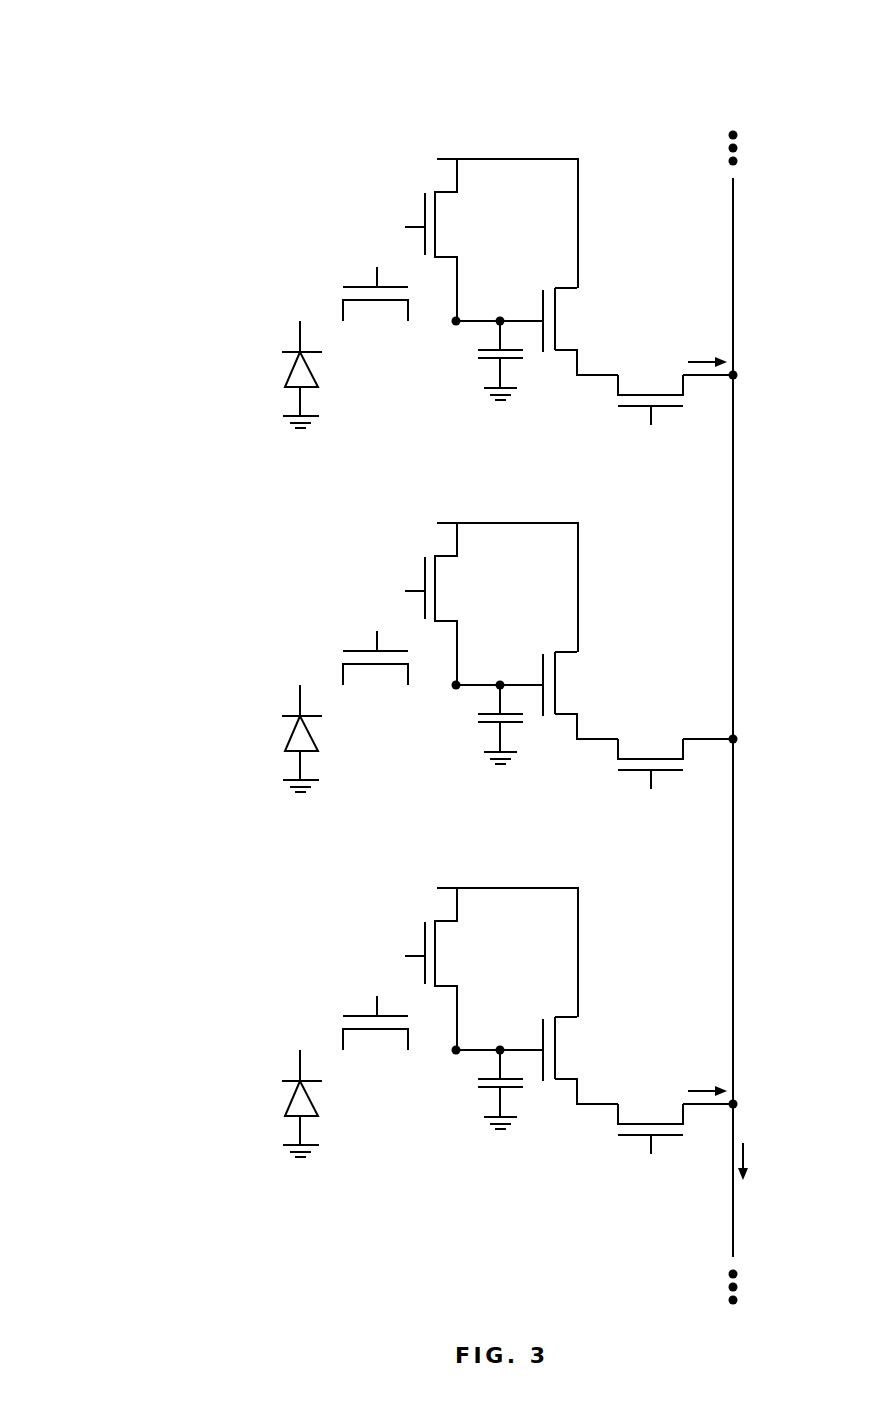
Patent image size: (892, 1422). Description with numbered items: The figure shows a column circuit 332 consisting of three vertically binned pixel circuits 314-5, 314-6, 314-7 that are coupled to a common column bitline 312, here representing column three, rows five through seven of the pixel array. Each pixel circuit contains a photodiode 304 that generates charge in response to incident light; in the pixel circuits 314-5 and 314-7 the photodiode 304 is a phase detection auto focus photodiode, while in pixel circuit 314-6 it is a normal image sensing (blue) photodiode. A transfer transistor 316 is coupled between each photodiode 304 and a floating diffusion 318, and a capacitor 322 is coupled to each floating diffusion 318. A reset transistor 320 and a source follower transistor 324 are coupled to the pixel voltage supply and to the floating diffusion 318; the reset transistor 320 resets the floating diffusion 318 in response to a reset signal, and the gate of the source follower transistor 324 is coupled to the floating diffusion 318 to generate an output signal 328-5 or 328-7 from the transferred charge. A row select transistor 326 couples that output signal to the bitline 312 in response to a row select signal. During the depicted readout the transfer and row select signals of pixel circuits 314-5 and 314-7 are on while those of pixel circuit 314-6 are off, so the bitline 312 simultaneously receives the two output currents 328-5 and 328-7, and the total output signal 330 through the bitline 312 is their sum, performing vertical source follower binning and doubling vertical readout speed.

The pixel column circuit 332 is at (788, 33).
The column bitline 312 is at (730, 218).
The pixel circuit 314-5 is at (348, 199).
The pixel circuit 314-6 is at (519, 661).
The pixel circuit 314-7 is at (519, 1026).
The reset transistor 320 is at (456, 229).
The transfer transistor 316 is at (378, 311).
The floating diffusion 318 is at (497, 323).
The capacitor 322 is at (518, 365).
The source follower transistor 324 is at (583, 303).
The row select transistor 326 is at (640, 375).
The photodiode 304 is at (320, 386).
The output signal 328-5 is at (698, 355).
The output signal 328-7 is at (693, 1069).
The total output signal 330 is at (748, 1153).